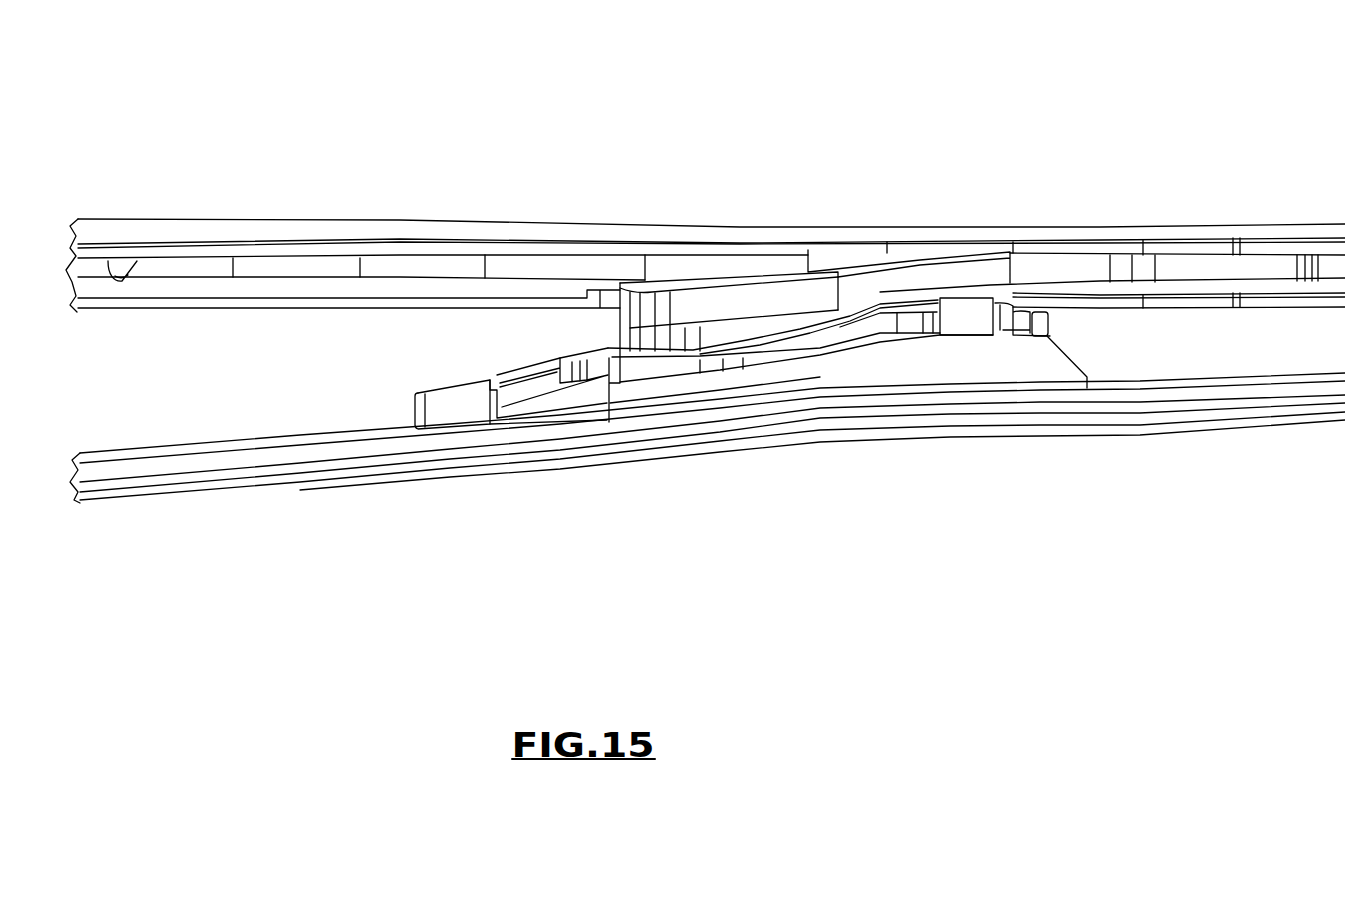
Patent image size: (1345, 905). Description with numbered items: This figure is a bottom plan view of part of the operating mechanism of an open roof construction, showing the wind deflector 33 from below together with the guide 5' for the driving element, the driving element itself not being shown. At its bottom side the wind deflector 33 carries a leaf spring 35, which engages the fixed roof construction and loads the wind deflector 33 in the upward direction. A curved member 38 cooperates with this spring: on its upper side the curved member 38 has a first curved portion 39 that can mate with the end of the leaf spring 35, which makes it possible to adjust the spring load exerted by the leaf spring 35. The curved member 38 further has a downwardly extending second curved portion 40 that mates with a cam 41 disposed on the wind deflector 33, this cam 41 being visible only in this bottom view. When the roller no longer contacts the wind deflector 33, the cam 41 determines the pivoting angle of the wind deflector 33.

The wind deflector 33 is at (617, 266).
The leaf spring 35 is at (786, 297).
The first curved portion 39 is at (512, 366).
The second curved portion 40 is at (837, 340).
The cam 41 is at (972, 318).
The curved member 38 is at (1032, 354).
The guide for driving element 5' is at (707, 479).